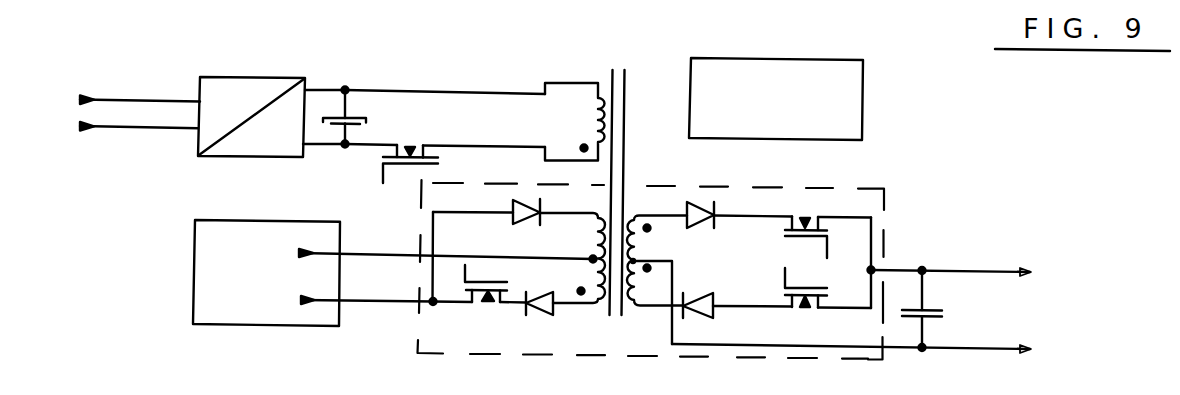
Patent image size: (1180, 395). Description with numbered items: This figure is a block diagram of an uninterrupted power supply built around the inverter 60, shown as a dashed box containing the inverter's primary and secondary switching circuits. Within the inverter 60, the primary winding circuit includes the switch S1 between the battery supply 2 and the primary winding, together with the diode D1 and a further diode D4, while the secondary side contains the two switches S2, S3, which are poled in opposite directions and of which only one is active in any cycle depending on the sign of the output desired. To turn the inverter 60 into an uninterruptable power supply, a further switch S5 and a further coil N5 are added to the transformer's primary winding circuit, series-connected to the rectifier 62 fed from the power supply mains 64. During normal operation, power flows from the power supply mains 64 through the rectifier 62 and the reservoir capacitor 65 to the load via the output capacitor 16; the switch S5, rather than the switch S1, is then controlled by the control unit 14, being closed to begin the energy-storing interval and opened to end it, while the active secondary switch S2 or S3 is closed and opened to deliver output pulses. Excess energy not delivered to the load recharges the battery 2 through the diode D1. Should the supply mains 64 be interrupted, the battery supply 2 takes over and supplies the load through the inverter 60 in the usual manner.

The DC supply 2 is at (302, 234).
The control unit 14 is at (850, 73).
The output capacitor 16 is at (923, 260).
The inverter 60 is at (878, 197).
The rectifier 62 is at (215, 77).
The power supply mains 64 is at (107, 99).
The reservoir capacitor 65 is at (345, 88).
The switch S1 is at (486, 304).
The switch S2 is at (810, 225).
The switch S3 is at (806, 306).
The further switch S5 is at (410, 147).
The further coil N5 is at (575, 122).
The diode D1 is at (524, 227).
The diode D4 is at (547, 319).